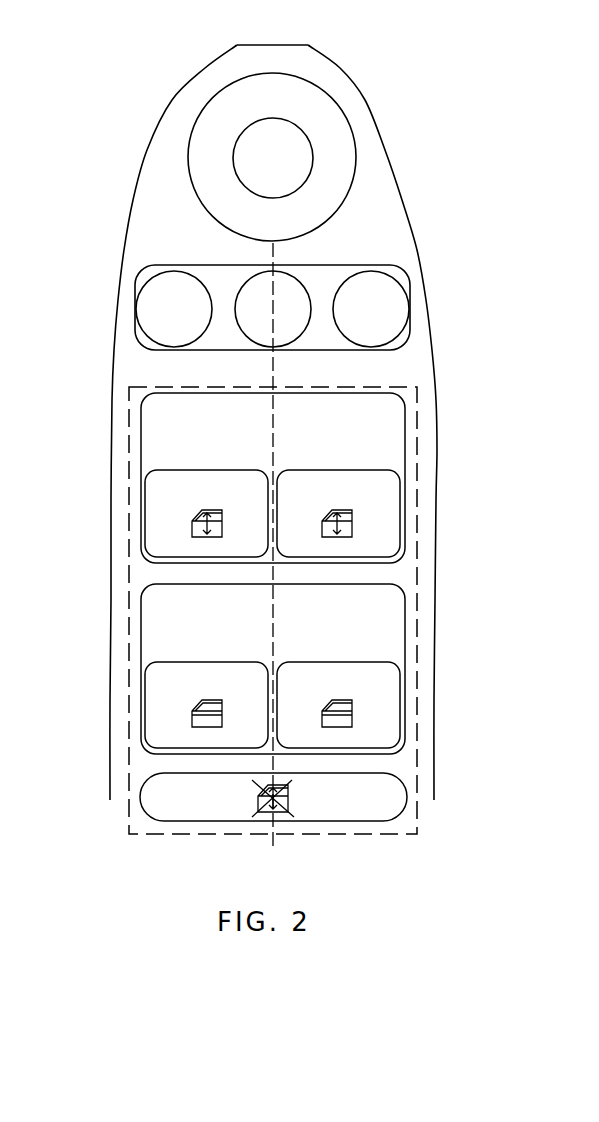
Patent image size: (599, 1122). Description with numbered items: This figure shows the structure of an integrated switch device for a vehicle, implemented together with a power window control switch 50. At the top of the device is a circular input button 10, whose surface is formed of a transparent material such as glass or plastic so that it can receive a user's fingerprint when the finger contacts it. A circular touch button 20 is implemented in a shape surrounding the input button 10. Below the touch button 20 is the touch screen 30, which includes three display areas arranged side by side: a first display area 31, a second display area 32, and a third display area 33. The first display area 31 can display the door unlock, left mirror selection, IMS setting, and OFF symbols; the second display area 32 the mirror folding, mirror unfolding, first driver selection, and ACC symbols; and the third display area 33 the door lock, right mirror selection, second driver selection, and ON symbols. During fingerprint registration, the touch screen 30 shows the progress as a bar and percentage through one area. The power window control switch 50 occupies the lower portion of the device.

The input button 10 is at (252, 156).
The touch button 20 is at (327, 127).
The touch screen 30 is at (330, 277).
The first display area 31 is at (155, 304).
The second display area 32 is at (263, 332).
The third display area 33 is at (382, 323).
The power window control switch 50 is at (417, 818).